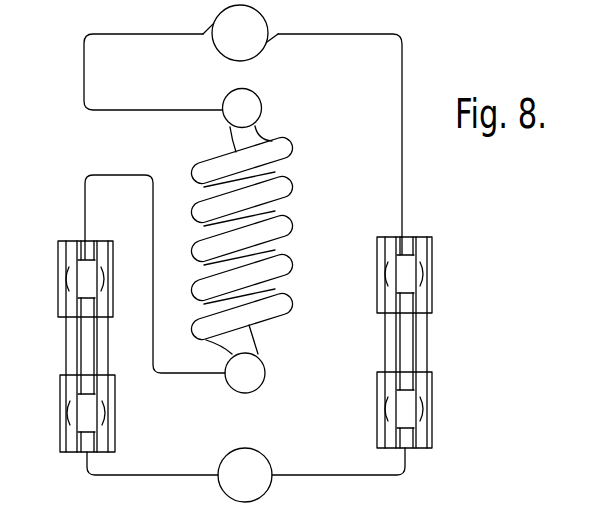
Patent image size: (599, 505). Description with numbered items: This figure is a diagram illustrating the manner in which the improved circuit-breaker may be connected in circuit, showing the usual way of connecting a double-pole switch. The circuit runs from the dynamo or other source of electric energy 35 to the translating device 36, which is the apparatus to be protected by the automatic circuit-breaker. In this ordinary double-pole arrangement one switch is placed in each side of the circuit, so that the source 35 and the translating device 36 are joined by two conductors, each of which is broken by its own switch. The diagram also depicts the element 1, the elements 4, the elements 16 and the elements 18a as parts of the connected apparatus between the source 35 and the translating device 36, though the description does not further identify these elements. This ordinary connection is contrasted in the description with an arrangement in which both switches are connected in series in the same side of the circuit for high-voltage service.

The helical coil tube 1 is at (298, 227).
The header fitting 4 is at (239, 241).
The fin block 16 is at (442, 382).
The finned tube 18a is at (438, 335).
The dynamo or other source of electric energy 35 is at (240, 33).
The translating device 36 is at (245, 475).